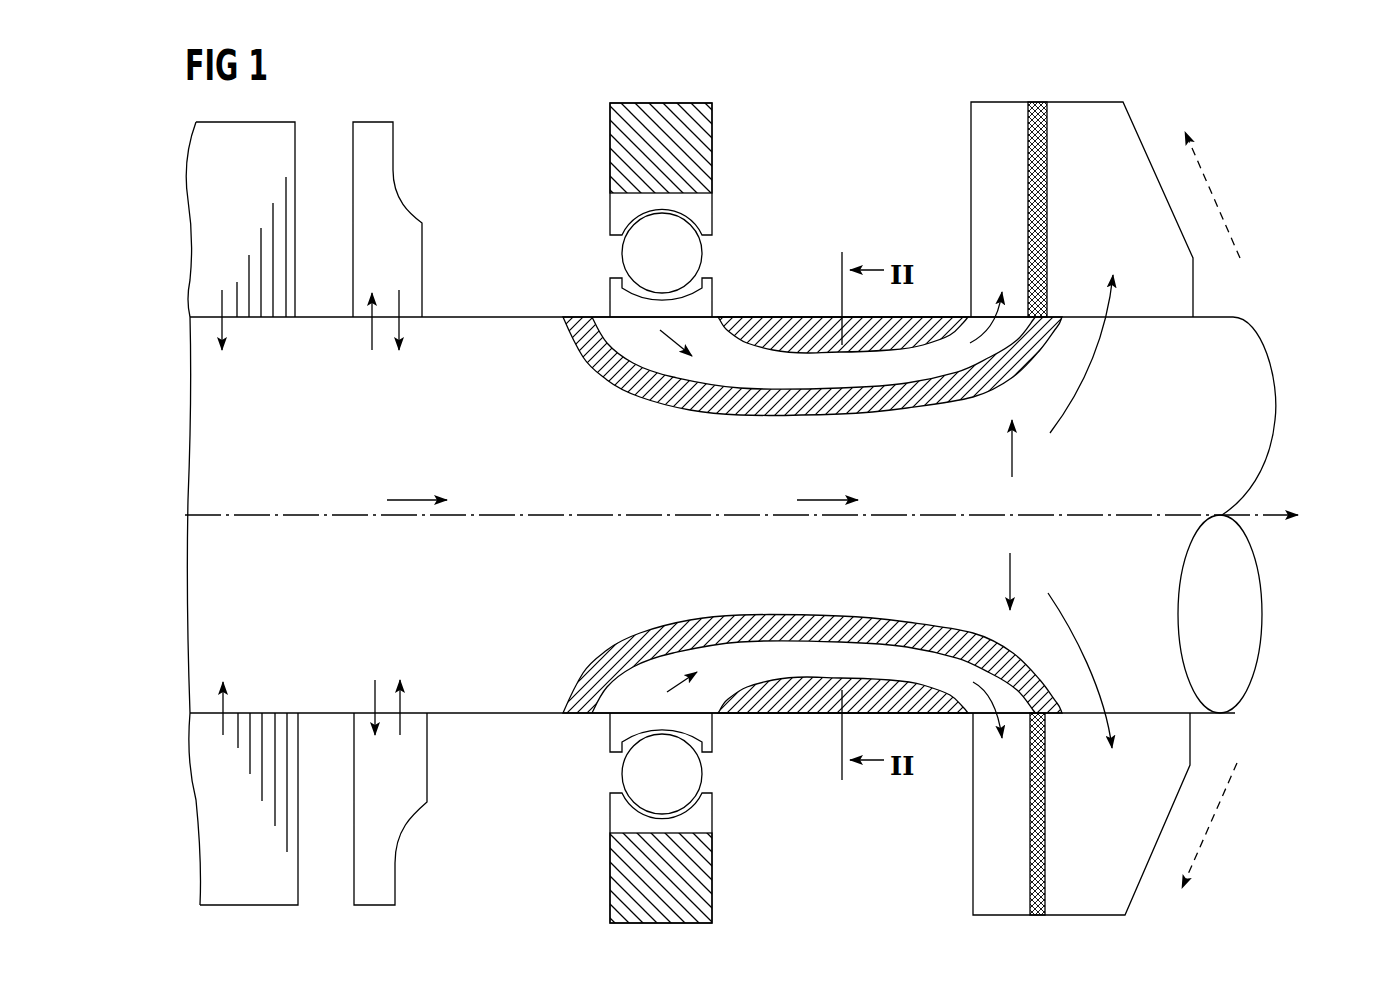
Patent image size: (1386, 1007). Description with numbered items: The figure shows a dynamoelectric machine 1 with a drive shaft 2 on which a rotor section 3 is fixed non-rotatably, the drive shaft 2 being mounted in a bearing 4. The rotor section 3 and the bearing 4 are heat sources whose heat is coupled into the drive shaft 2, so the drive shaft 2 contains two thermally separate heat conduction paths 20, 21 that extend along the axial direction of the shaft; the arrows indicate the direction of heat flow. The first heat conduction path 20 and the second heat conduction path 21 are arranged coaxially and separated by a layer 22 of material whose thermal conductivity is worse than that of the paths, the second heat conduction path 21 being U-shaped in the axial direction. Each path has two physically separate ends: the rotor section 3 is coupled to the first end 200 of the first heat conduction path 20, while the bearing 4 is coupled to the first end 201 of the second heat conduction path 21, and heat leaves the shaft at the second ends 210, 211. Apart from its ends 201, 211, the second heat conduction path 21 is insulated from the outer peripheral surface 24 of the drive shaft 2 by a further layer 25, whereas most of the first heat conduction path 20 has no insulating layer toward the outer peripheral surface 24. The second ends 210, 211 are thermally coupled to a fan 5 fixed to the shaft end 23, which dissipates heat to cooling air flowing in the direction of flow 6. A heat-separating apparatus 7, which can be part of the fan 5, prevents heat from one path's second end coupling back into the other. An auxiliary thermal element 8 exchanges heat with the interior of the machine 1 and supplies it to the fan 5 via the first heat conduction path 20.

The dynamoelectric machine 1 is at (1300, 148).
The drive shaft 2 is at (454, 715).
The rotor section 3 is at (285, 152).
The bearing 4 is at (724, 216).
The fan 5 is at (1194, 293).
The direction of flow of cooling air 6 is at (1193, 160).
The heat-separating apparatus 7 is at (1047, 222).
The auxiliary thermal element 8 is at (416, 254).
The first heat conduction path 20 is at (410, 498).
The second heat conduction path 21 is at (647, 306).
The layer 22 is at (768, 416).
The shaft end 23 is at (1014, 515).
The outer peripheral surface 24 is at (498, 317).
The further layer 25 is at (777, 333).
The first end of the first heat conduction path 200 is at (271, 326).
The first end of the second heat conduction path 201 is at (602, 306).
The second end of the first heat conduction path 210 is at (1166, 326).
The second end of the second heat conduction path 211 is at (962, 307).